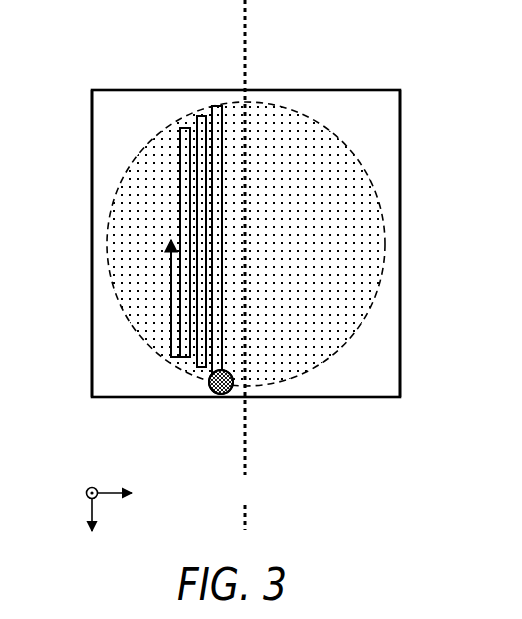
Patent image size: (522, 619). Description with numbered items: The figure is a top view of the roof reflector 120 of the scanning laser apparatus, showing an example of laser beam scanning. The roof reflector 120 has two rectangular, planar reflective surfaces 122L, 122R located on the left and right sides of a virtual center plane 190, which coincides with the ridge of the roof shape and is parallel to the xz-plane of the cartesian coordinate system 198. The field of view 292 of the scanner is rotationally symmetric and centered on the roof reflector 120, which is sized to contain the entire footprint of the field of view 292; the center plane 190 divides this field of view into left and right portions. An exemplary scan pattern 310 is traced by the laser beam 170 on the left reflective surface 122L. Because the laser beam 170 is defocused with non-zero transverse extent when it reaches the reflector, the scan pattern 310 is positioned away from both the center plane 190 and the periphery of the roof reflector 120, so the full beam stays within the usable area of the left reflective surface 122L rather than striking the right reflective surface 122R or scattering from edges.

The roof reflector 120 is at (113, 60).
The left reflective surface 122L is at (92, 210).
The right reflective surface 122R is at (400, 212).
The field of view 292 is at (322, 125).
The scan pattern 310 is at (171, 327).
The laser beam 170 is at (221, 394).
The center plane 190 is at (246, 265).
The cartesian coordinate system 198 is at (70, 507).